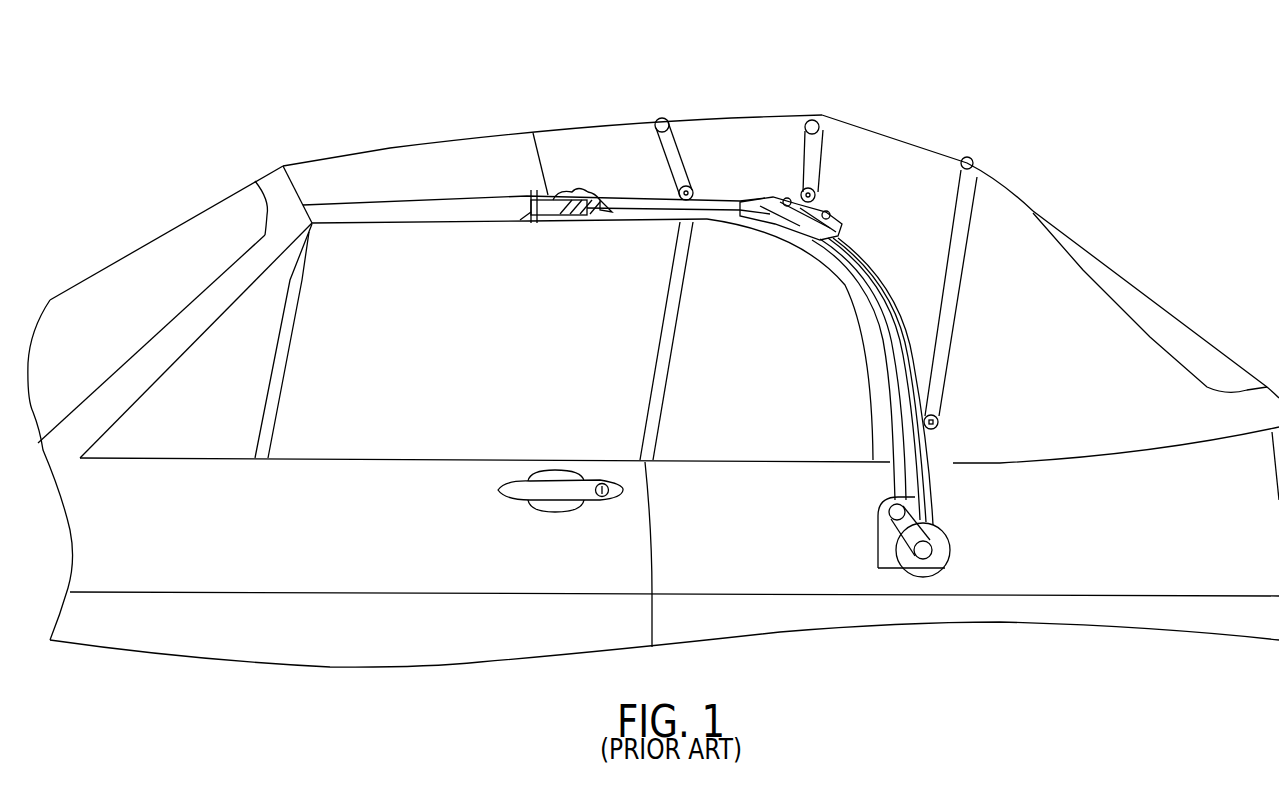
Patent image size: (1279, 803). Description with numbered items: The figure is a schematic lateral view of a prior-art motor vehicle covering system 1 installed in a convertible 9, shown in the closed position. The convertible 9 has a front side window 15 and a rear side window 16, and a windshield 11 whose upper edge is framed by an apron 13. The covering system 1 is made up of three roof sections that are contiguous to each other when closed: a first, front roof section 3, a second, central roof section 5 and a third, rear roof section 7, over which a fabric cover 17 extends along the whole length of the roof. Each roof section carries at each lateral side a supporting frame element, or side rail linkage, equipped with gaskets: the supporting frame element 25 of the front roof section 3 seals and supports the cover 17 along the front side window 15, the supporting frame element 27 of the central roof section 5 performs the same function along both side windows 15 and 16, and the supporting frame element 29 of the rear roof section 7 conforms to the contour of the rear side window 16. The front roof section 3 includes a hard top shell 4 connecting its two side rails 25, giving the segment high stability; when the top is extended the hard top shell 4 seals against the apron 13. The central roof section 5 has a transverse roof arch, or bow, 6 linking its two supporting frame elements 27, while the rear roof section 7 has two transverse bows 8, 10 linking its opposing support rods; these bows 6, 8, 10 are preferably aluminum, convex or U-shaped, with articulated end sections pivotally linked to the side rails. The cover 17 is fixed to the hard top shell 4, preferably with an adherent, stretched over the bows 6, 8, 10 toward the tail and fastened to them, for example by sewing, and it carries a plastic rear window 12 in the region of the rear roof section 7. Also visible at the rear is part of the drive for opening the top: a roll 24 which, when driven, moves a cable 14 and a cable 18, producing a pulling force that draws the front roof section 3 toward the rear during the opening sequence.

The motor vehicle covering system 1 is at (427, 105).
The first, front roof section 3 is at (452, 237).
The hard top shell 4 is at (463, 147).
The second, central roof section 5 is at (714, 242).
The transverse roof arch 6 is at (672, 130).
The third, rear roof section 7 is at (865, 405).
The transverse roof arch 8 is at (824, 124).
The convertible 9 is at (330, 568).
The transverse roof arch 10 is at (969, 156).
The windshield 11 is at (148, 256).
The plastic rear window 12 is at (1158, 308).
The apron 13 is at (272, 180).
The cable 14 is at (937, 505).
The front side window 15 is at (370, 341).
The rear side window 16 is at (756, 339).
The fabric cover 17 is at (756, 118).
The cable 18 is at (652, 224).
The roll 24 is at (952, 550).
The supporting frame element 25 is at (405, 215).
The supporting frame element 27 is at (648, 206).
The supporting frame element 29 is at (862, 316).